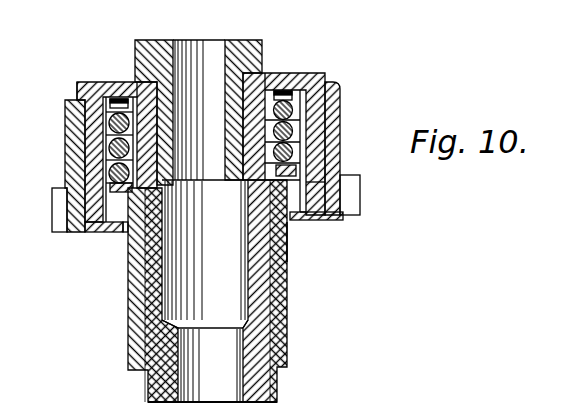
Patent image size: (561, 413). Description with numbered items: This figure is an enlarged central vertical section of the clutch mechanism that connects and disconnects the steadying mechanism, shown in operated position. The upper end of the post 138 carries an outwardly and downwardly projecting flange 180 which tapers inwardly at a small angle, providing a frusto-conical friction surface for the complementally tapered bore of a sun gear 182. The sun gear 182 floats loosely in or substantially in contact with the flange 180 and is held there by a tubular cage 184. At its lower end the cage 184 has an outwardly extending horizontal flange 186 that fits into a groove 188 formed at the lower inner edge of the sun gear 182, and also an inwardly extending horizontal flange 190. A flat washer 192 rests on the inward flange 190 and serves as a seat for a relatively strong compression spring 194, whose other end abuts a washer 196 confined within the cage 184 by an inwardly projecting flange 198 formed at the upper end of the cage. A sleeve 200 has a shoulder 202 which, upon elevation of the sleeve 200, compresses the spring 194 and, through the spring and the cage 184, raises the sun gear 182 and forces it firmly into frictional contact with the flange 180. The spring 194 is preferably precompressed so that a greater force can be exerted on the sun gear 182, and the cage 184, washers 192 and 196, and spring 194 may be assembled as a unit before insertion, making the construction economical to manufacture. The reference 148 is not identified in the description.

The post 138 is at (266, 390).
The spindle head 148 is at (155, 59).
The flange 180 is at (339, 140).
The sun gear 182 is at (332, 165).
The tubular cage 184 is at (70, 151).
The outwardly extending horizontal flange 186 is at (81, 235).
The groove 188 is at (58, 235).
The inwardly extending horizontal flange 190 is at (112, 235).
The flat washer 192 is at (305, 221).
The compression spring 194 is at (330, 188).
The washer 196 is at (282, 90).
The inwardly projecting flange 198 is at (304, 74).
The sleeve 200 is at (289, 297).
The shoulder 202 is at (287, 244).